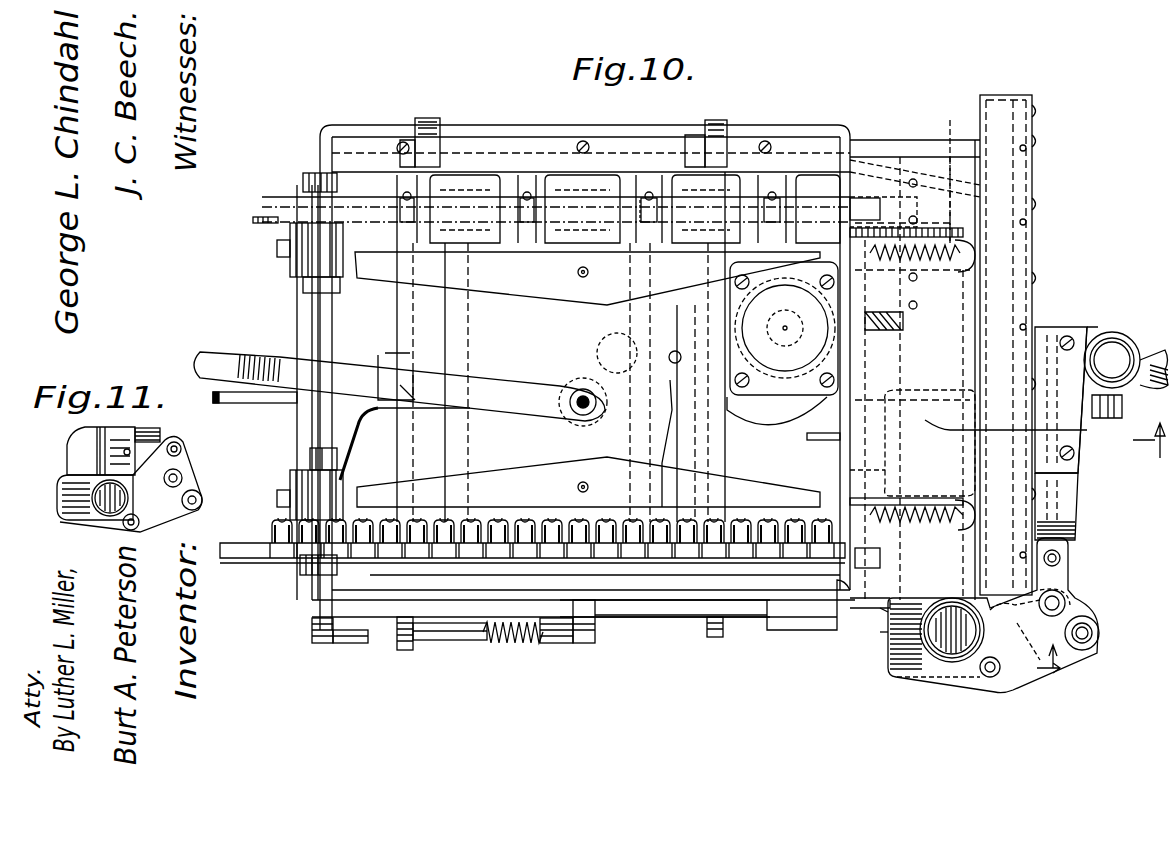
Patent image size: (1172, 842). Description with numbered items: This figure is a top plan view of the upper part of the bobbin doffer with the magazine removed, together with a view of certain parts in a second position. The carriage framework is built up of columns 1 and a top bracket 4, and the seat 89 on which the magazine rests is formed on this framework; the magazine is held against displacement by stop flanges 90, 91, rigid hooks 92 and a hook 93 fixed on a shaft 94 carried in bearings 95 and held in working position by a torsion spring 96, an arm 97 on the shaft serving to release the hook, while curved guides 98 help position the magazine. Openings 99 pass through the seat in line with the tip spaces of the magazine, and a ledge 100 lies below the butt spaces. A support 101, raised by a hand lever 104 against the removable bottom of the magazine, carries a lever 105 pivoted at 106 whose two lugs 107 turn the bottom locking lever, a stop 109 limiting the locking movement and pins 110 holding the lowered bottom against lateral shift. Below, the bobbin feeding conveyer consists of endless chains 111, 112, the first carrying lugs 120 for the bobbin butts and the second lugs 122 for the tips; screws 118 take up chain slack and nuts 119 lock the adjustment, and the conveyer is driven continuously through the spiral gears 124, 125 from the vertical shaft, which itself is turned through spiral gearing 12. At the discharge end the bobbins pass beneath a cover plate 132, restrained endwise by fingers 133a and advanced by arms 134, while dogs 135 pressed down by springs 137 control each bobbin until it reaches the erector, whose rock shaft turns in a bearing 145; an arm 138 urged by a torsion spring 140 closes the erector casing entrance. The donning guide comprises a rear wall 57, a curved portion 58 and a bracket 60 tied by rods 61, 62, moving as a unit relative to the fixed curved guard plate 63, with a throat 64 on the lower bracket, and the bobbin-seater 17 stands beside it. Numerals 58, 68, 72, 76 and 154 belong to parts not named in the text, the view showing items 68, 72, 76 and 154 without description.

In FIG. 10, the column 1 is at (1106, 342).
In FIG. 10, the top bracket 4 is at (1118, 338).
In FIG. 10, the spiral gearing 12 is at (1150, 452).
In FIG. 10, the bobbin-seater 17 is at (1084, 645).
In FIG. 10, the rear wall 57 is at (900, 665).
In FIG. 10, the curved portion 58 is at (985, 672).
In FIG. 10, the bracket 60 is at (1017, 630).
In FIG. 11, the bracket 60 is at (172, 502).
In FIG. 10, the rod 61 is at (995, 675).
In FIG. 10, the rod 62 is at (1062, 598).
In FIG. 10, the curved guard plate 63 is at (880, 632).
In FIG. 11, the curved guard plate 63 is at (70, 502).
In FIG. 10, the throat 64 is at (880, 608).
In FIG. 11, the throat 64 is at (92, 500).
In FIG. 10, the roller 68 is at (948, 658).
In FIG. 10, the lug 72 is at (1062, 557).
In FIG. 10, the pivot boss 76 is at (1086, 622).
In FIG. 10, the seat 89 is at (505, 150).
In FIG. 10, the stop flange 90 is at (645, 185).
In FIG. 10, the stop flange 91 is at (878, 470).
In FIG. 10, the rigid hook 92 is at (437, 135).
In FIG. 10, the hook 93 is at (586, 645).
In FIG. 10, the shaft 94 is at (456, 640).
In FIG. 10, the bearing 95 is at (350, 645).
In FIG. 10, the torsion spring 96 is at (512, 645).
In FIG. 10, the arm 97 is at (320, 645).
In FIG. 10, the curved guide 98 is at (315, 185).
In FIG. 10, the opening 99 is at (400, 185).
In FIG. 10, the ledge 100 is at (618, 578).
In FIG. 10, the support 101 is at (513, 477).
In FIG. 10, the hand lever 104 is at (250, 402).
In FIG. 10, the lever 105 is at (210, 355).
In FIG. 10, the pivot 106 is at (583, 393).
In FIG. 10, the lug 107 is at (400, 385).
In FIG. 10, the stop 109 is at (598, 350).
In FIG. 10, the pin 110 is at (578, 272).
In FIG. 10, the endless chain 111 is at (740, 530).
In FIG. 10, the endless chain 112 is at (642, 200).
In FIG. 10, the screw 118 is at (277, 250).
In FIG. 10, the nut 119 is at (310, 455).
In FIG. 10, the lug 120 is at (242, 560).
In FIG. 10, the lug 122 is at (255, 220).
In FIG. 10, the spiral gear 124 is at (770, 372).
In FIG. 10, the spiral gear 125 is at (905, 322).
In FIG. 10, the cover plate 132 is at (1087, 430).
In FIG. 10, the finger 133a is at (775, 690).
In FIG. 10, the arm 134 is at (962, 233).
In FIG. 10, the dog 135 is at (948, 252).
In FIG. 10, the spring 137 is at (975, 265).
In FIG. 10, the arm 138 is at (1006, 414).
In FIG. 10, the torsion spring 140 is at (898, 398).
In FIG. 10, the bearing 145 is at (1065, 520).
In FIG. 10, the upright bar 154 is at (995, 135).